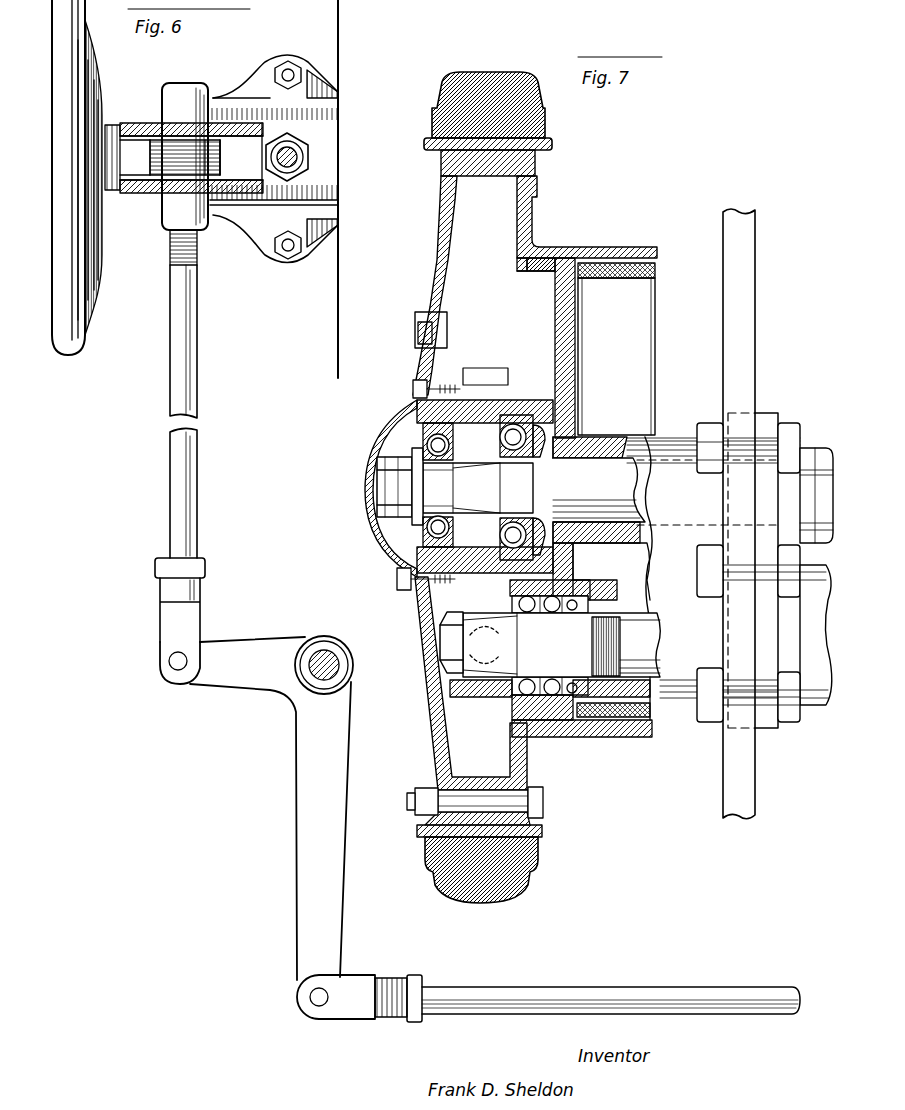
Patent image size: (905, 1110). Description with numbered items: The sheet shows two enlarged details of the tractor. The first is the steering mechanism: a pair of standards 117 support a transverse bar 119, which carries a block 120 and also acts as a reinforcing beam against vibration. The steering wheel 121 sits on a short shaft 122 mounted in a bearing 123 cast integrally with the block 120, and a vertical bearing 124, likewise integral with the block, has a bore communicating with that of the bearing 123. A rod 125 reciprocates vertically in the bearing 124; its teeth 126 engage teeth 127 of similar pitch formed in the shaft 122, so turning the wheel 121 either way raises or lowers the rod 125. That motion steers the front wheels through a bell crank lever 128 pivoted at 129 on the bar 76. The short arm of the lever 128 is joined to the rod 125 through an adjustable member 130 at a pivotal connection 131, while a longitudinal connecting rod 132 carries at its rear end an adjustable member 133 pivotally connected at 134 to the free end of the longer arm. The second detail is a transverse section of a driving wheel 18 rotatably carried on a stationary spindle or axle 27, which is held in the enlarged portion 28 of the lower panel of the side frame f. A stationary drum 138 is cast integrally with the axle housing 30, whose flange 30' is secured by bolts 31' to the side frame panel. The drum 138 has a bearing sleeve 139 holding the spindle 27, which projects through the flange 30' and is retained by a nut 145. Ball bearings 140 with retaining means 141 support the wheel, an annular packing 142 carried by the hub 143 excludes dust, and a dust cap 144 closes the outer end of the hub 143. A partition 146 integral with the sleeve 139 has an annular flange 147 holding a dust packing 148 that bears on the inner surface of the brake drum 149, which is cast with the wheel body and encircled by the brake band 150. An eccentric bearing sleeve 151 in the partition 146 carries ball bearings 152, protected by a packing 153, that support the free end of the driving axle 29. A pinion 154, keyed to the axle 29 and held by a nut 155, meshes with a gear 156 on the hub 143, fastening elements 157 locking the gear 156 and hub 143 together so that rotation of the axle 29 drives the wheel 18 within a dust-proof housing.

In FIG. 6, the standards 117 is at (307, 189).
In FIG. 6, the transverse bar 119 is at (312, 162).
In FIG. 6, the block 120 is at (322, 105).
In FIG. 6, the steering wheel 121 is at (70, 55).
In FIG. 6, the short shaft 122 is at (135, 130).
In FIG. 6, the bearing 123 is at (140, 192).
In FIG. 6, the vertical bearing 124 is at (206, 86).
In FIG. 6, the rod 125 is at (180, 370).
In FIG. 6, the teeth 126 is at (170, 258).
In FIG. 6, the teeth 127 is at (212, 195).
In FIG. 6, the bell crank lever 128 is at (305, 702).
In FIG. 6, the pivot 129 is at (333, 680).
In FIG. 6, the adjustable member 130 is at (178, 587).
In FIG. 6, the pivotal connection 131 is at (168, 662).
In FIG. 6, the connecting rod 132 is at (610, 1000).
In FIG. 6, the adjustable member 133 is at (422, 982).
In FIG. 6, the pivotal connection 134 is at (319, 1004).
In FIG. 6, the bar 76 is at (308, 665).
In FIG. 7, the driving wheel 18 is at (430, 215).
In FIG. 7, the axle 27 is at (676, 480).
In FIG. 7, the enlarged portion 28 is at (768, 415).
In FIG. 7, the rear axle 29 is at (561, 645).
In FIG. 7, the axle housing 30 is at (764, 625).
In FIG. 7, the flange 30' is at (748, 717).
In FIG. 7, the bolts 31' is at (703, 509).
In FIG. 7, the stationary drum 138 is at (682, 673).
In FIG. 7, the bearing sleeve 139 is at (617, 535).
In FIG. 7, the ball bearings 140 is at (478, 488).
In FIG. 7, the retaining means 141 is at (377, 478).
In FIG. 7, the annular packing 142 is at (577, 437).
In FIG. 7, the hub 143 is at (522, 410).
In FIG. 7, the dust cap 144 is at (410, 500).
In FIG. 7, the nut 145 is at (820, 448).
In FIG. 7, the partition 146 is at (575, 386).
In FIG. 7, the annular flange 147 is at (517, 270).
In FIG. 7, the dust packing 148 is at (552, 258).
In FIG. 7, the brake drum 149 is at (620, 252).
In FIG. 7, the brake band 150 is at (628, 309).
In FIG. 7, the eccentric bearing sleeve 151 is at (590, 590).
In FIG. 7, the ball bearings 152 is at (528, 613).
In FIG. 7, the packing 153 is at (575, 723).
In FIG. 7, the pinion 154 is at (490, 697).
In FIG. 7, the nut 155 is at (442, 637).
In FIG. 7, the gear 156 is at (487, 370).
In FIG. 7, the fastening element 157 is at (412, 388).
In FIG. 7, the side frame f is at (739, 514).